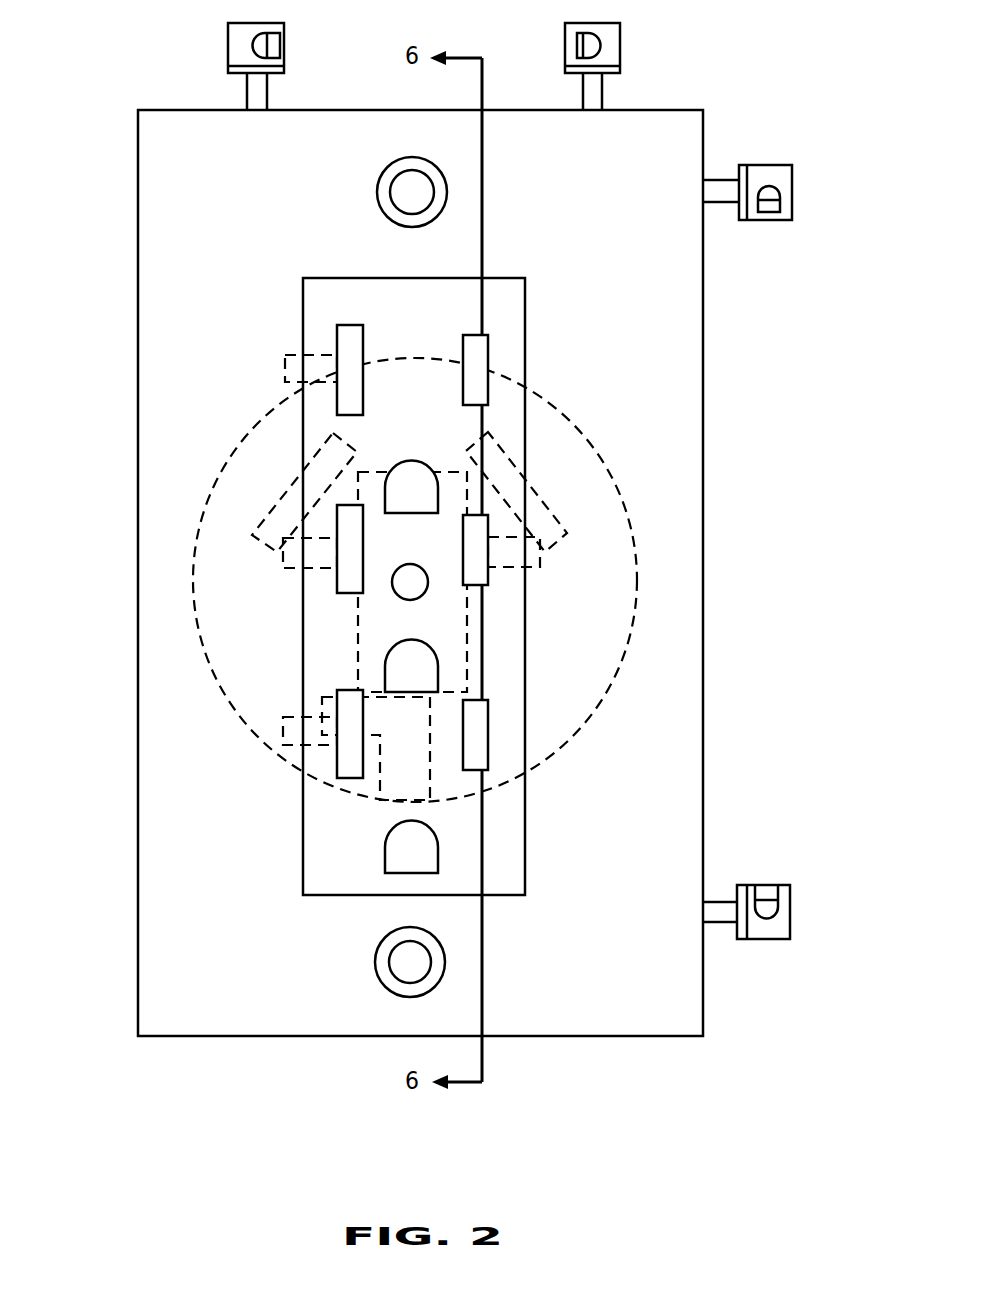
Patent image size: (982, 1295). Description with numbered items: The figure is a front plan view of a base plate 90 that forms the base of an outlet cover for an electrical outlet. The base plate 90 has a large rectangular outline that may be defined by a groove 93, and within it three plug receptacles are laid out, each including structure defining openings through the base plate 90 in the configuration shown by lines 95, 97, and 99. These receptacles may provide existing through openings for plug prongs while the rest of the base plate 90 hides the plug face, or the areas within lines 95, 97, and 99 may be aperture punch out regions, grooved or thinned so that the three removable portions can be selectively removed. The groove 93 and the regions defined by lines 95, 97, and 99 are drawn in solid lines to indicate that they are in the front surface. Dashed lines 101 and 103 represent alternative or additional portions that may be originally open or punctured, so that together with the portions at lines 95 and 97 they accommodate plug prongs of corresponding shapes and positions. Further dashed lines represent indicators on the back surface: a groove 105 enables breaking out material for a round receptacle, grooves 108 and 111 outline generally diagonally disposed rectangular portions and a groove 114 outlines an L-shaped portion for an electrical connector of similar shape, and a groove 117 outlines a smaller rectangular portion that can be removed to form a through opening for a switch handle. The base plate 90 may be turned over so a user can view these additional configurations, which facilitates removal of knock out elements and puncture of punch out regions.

The base plate 90 is at (760, 350).
The groove 93 is at (527, 298).
The lines 95 is at (362, 342).
The lines 97 is at (490, 338).
The lines 99 is at (425, 462).
The dashed lines 101 is at (285, 367).
The dashed lines 103 is at (540, 568).
The groove 105 is at (603, 465).
The groove 108 is at (293, 483).
The groove 111 is at (540, 502).
The groove 114 is at (380, 795).
The groove 117 is at (358, 628).